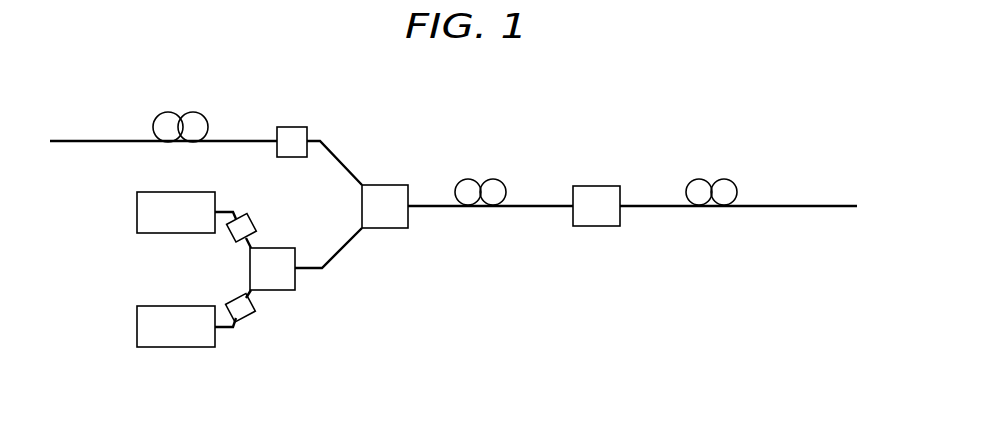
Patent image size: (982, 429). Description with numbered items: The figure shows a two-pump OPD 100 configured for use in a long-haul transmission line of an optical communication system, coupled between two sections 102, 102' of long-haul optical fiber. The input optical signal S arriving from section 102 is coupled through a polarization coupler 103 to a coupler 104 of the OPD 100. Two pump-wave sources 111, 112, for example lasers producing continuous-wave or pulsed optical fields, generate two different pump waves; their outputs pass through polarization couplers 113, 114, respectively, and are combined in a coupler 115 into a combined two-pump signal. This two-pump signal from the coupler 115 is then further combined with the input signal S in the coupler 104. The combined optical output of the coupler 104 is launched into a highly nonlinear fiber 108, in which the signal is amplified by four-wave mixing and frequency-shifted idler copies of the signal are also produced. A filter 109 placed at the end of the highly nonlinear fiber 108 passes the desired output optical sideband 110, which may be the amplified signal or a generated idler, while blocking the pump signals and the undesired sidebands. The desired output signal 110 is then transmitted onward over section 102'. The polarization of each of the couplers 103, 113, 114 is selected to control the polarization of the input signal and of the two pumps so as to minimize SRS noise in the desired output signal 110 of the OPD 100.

The two-pump OPD 100 is at (484, 274).
The section of long-haul optical fiber 102 is at (160, 126).
The section of long-haul optical fiber 102' is at (828, 192).
The polarization coupler 103 is at (297, 127).
The coupler 104 is at (383, 185).
The highly nonlinear fiber 108 is at (535, 205).
The filter 109 is at (595, 186).
The desired output optical sideband 110 is at (653, 205).
The pump-wave source 111 is at (137, 212).
The pump-wave source 112 is at (137, 327).
The polarization coupler 113 is at (255, 217).
The polarization coupler 114 is at (255, 318).
The coupler 115 is at (296, 281).